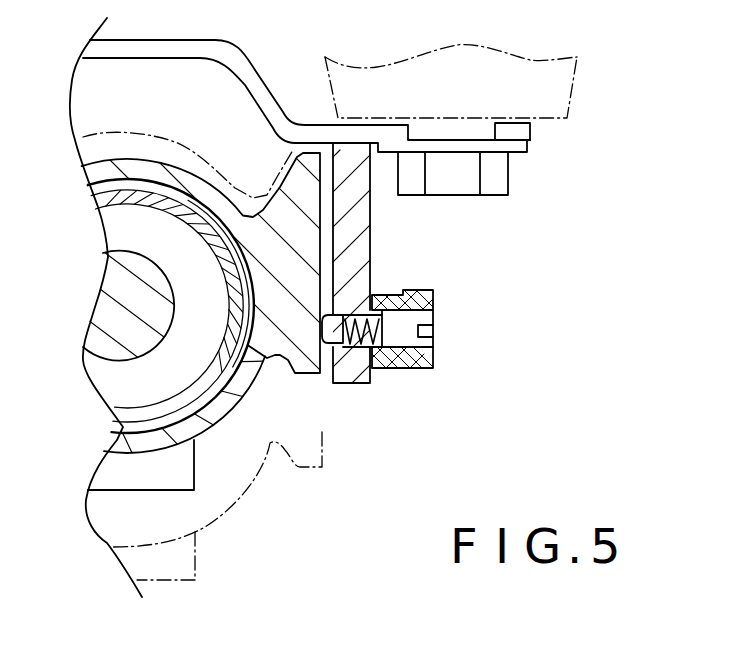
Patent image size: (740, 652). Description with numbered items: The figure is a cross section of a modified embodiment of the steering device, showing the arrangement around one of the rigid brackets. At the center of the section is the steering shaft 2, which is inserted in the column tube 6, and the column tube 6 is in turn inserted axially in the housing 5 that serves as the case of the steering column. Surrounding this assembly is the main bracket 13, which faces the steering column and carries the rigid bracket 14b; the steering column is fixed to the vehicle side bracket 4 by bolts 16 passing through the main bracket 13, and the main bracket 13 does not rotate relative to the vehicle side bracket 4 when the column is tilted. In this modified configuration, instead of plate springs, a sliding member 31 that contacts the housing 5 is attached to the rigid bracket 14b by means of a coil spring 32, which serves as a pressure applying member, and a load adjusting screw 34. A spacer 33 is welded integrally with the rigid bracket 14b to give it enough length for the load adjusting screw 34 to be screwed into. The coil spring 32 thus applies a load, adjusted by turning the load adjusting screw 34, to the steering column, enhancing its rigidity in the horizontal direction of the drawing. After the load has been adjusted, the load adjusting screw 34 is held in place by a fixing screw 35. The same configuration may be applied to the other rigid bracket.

The steering shaft 2 is at (138, 347).
The vehicle side bracket 4 is at (565, 83).
The housing 5 is at (197, 393).
The column tube 6 is at (207, 397).
The main bracket 13 is at (160, 43).
The rigid bracket 14b is at (360, 248).
The bolt 16 is at (455, 188).
The sliding member 31 is at (338, 348).
The coil spring 32 is at (362, 343).
The spacer 33 is at (390, 350).
The load adjusting screw 34 is at (433, 353).
The fixing screw 35 is at (433, 293).